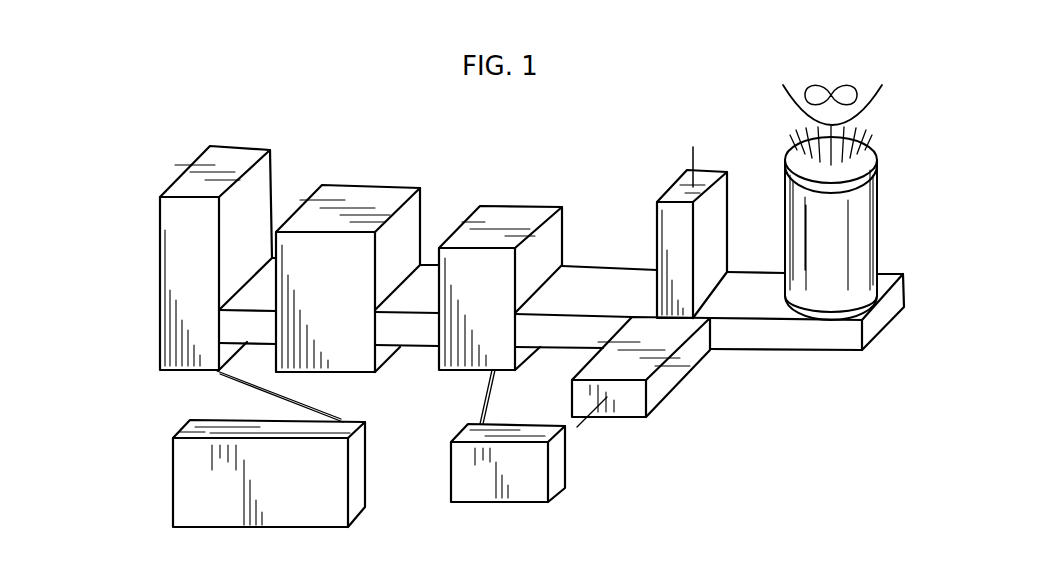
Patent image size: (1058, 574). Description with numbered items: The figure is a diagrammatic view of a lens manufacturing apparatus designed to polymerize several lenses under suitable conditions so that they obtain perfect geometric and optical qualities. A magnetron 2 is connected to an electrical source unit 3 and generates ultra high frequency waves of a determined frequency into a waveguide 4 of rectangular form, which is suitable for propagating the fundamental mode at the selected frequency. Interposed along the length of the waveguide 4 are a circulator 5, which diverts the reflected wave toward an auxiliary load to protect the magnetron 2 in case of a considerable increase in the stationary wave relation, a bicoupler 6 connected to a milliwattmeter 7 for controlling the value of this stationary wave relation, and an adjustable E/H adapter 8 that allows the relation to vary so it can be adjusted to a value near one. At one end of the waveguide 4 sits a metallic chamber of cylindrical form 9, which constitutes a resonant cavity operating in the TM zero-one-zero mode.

The magnetron 2 is at (260, 178).
The electrical source unit 3 is at (357, 492).
The waveguide 4 is at (603, 278).
The circulator 5 is at (375, 195).
The bicoupler 6 is at (517, 218).
The milliwattmeter 7 is at (556, 480).
The adjustable E/H adapter 8 is at (680, 382).
The metallic chamber of cylindrical form 9 is at (795, 212).